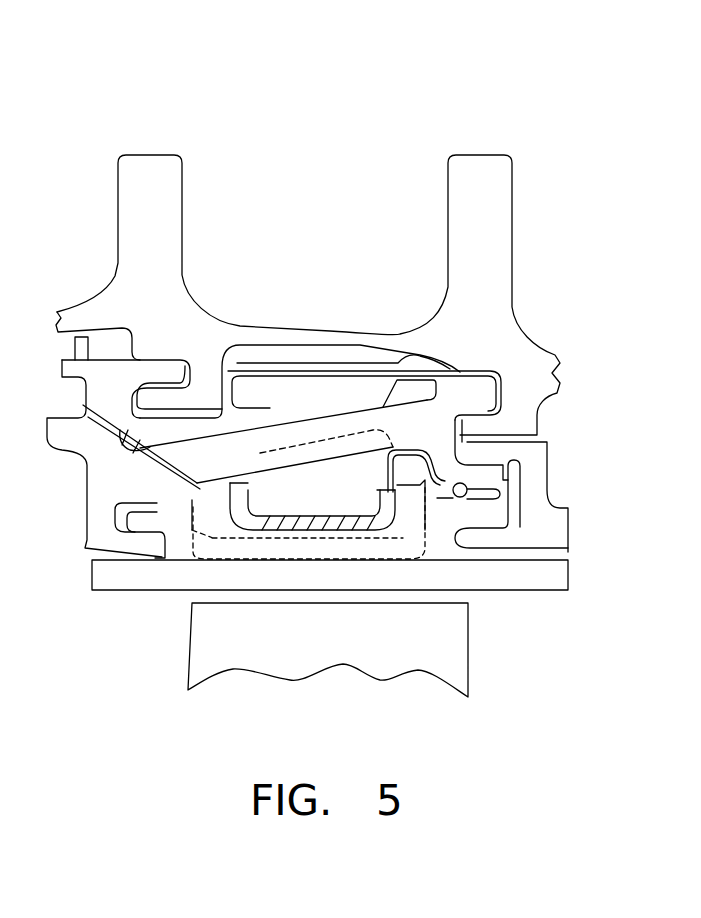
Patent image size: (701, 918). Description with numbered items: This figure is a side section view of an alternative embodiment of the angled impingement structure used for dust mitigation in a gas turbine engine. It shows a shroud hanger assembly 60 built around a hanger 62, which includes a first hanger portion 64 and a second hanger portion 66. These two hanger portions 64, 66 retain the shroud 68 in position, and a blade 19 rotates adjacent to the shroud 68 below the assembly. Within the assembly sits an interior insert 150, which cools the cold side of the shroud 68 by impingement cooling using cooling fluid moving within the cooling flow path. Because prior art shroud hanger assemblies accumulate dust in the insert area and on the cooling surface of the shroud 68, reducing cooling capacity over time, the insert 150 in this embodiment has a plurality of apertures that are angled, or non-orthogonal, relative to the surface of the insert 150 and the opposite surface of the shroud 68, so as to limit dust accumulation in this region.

The shroud hanger assembly 60 is at (377, 132).
The hanger 62 is at (212, 305).
The first hanger portion 64 is at (83, 478).
The second hanger portion 66 is at (563, 453).
The shroud 68 is at (577, 583).
The insert 150 is at (322, 500).
The blade 19 is at (425, 648).